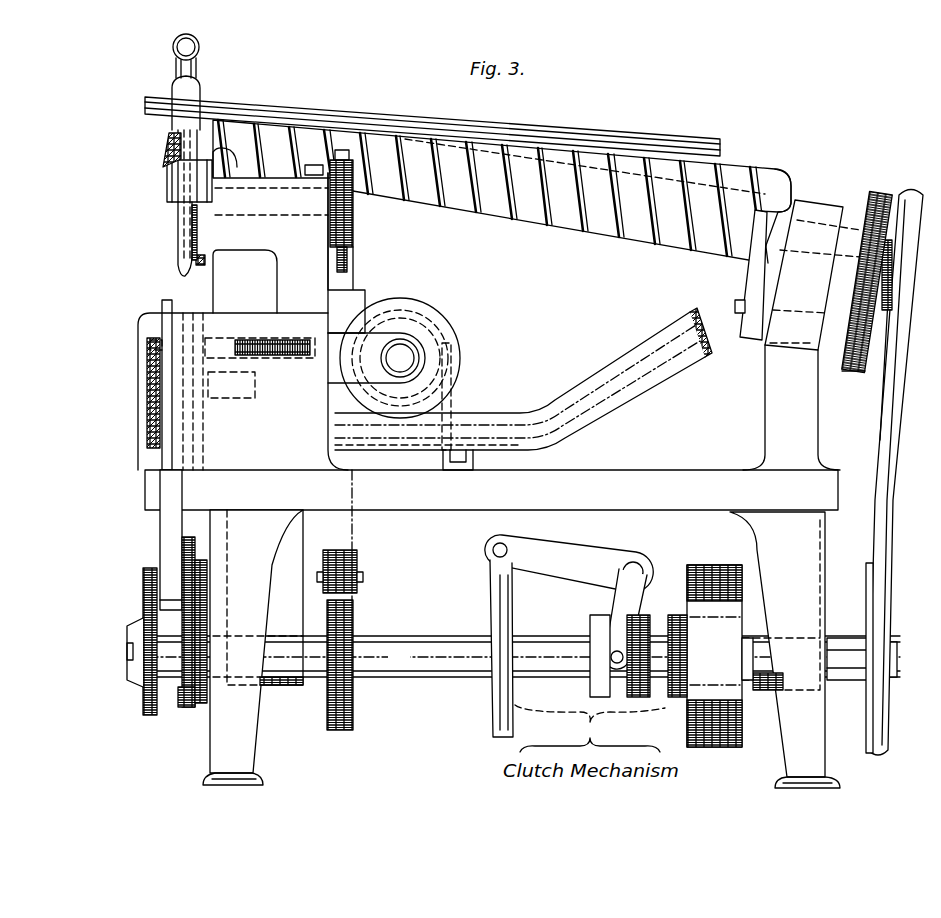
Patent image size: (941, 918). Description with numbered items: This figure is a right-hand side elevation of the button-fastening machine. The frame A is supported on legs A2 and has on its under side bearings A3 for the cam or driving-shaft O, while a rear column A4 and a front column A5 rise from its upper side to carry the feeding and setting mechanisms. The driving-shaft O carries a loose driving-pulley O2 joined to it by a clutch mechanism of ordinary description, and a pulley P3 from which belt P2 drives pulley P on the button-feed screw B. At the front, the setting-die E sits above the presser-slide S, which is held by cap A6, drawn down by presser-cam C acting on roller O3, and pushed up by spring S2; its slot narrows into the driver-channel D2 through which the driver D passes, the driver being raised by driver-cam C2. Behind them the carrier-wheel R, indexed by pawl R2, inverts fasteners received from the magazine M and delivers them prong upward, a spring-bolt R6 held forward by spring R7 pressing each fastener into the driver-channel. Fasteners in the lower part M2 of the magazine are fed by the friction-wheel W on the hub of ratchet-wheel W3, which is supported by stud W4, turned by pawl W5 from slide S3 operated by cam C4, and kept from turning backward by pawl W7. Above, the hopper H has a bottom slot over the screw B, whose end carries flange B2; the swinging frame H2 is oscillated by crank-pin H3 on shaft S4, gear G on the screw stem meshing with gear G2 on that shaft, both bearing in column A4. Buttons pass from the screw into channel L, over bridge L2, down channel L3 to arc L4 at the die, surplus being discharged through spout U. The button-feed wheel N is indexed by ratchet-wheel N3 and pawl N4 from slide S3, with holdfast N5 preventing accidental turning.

The frame A is at (491, 490).
The legs A2 is at (521, 649).
The bearings A3 is at (775, 695).
The rear column A4 is at (793, 335).
The front column A5 is at (243, 321).
The cap A6 is at (150, 386).
The button-feed screw B is at (502, 191).
The flange B2 is at (163, 160).
The presser-cam C is at (143, 612).
The driver-cam C2 is at (185, 707).
The cam C4 is at (352, 706).
The driver D is at (184, 490).
The driver-channel D2 is at (216, 296).
The setting-die E is at (206, 260).
The gear G is at (872, 194).
The gear G2 is at (856, 372).
The hopper H is at (759, 187).
The swinging frame H2 is at (748, 345).
The crank-pin H3 is at (735, 305).
The channel L is at (197, 44).
The bridge L2 is at (198, 66).
The channel L3 is at (186, 103).
The circular arc L4 is at (177, 258).
The magazine M is at (523, 379).
The lower part of magazine M2 is at (427, 436).
The button-feed wheel N is at (198, 240).
The ratchet-wheel N3 is at (354, 242).
The pawl N4 is at (348, 260).
The holdfast N5 is at (346, 142).
The driving-shaft O is at (515, 656).
The driving-pulley O2 is at (710, 656).
The roller O3 is at (182, 612).
The pulley P is at (906, 190).
The belt P2 is at (880, 432).
The pulley P3 is at (866, 590).
The carrier-wheel R is at (197, 375).
The pawl R2 is at (203, 680).
The spring-bolt R6 is at (233, 341).
The spring R7 is at (249, 382).
The presser-slide S is at (160, 312).
The spring S2 is at (147, 412).
The slide S3 is at (340, 535).
The shaft S4 is at (265, 214).
The spout U is at (568, 128).
The friction-wheel W is at (406, 312).
The ratchet-wheel W3 is at (448, 328).
The stud W4 is at (400, 358).
The pawl W5 is at (330, 396).
The pawl W7 is at (452, 400).